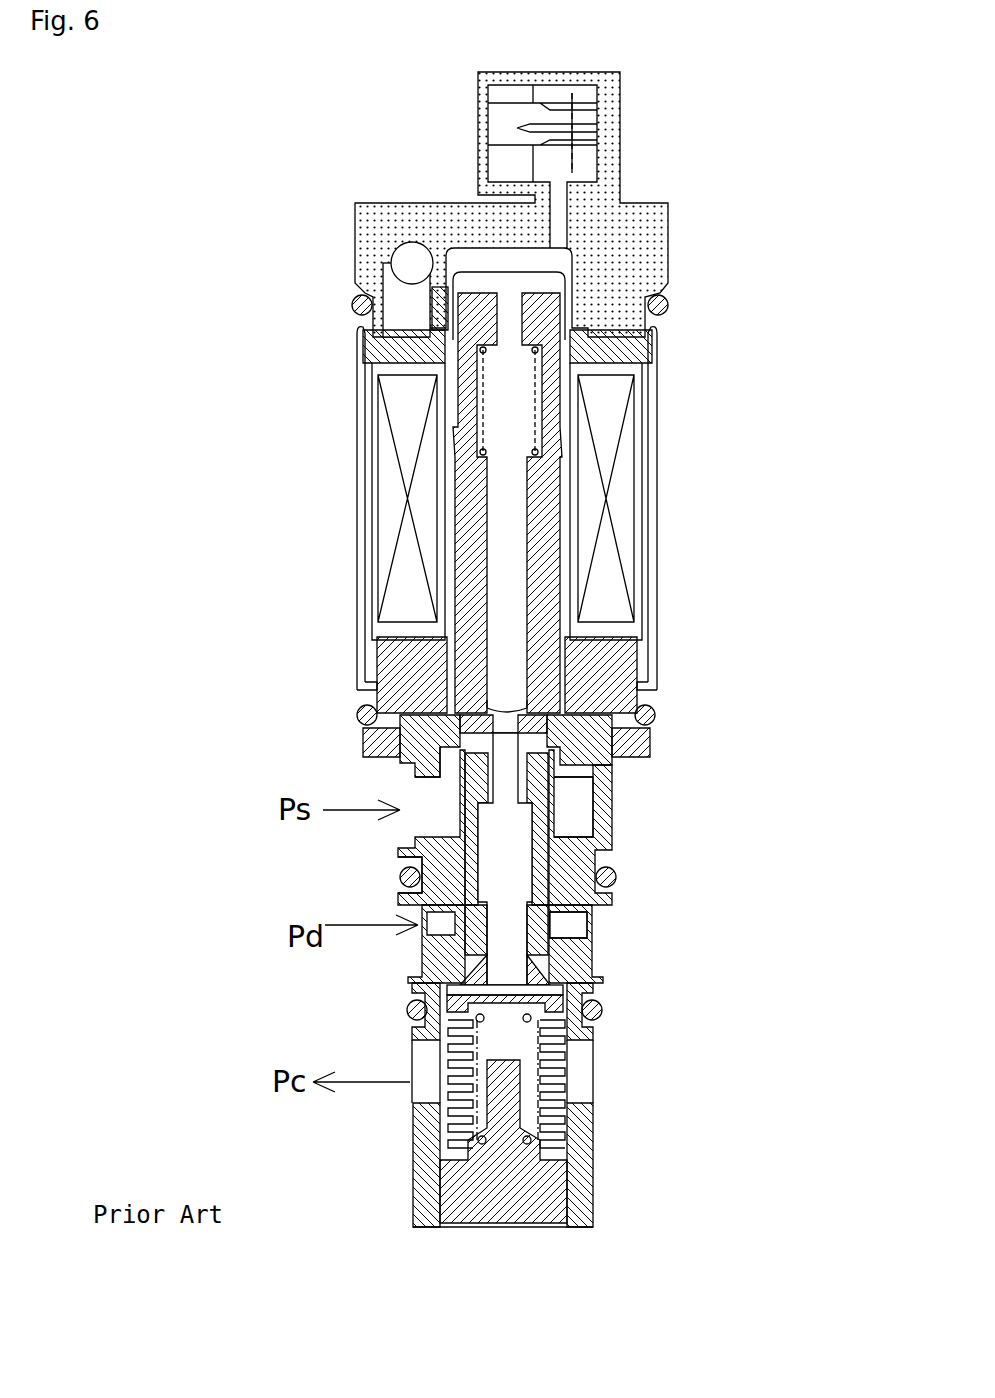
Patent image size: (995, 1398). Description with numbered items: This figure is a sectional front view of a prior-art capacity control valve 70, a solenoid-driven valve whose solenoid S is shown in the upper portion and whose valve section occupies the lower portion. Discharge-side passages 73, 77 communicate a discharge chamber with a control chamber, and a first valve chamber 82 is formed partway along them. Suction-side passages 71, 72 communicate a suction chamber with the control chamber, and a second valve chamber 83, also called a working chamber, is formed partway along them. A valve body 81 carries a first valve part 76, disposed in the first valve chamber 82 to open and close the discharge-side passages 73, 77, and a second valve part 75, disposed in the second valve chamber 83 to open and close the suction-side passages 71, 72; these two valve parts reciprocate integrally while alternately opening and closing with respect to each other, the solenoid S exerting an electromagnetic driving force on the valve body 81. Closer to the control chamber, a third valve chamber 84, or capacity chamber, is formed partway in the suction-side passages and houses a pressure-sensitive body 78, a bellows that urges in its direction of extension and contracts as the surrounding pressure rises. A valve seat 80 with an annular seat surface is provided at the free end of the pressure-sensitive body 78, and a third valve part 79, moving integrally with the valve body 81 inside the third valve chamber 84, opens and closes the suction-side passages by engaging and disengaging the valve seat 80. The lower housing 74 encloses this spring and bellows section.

The control valve 70 is at (297, 455).
The solenoid S is at (362, 493).
The suction-side passage 72 is at (505, 748).
The second valve part 75 is at (560, 788).
The second valve chamber 83 is at (553, 808).
The suction-side passage 71 is at (415, 815).
The valve body 81 is at (563, 880).
The first valve part 76 is at (400, 898).
The first valve chamber 82 is at (550, 927).
The discharge-side passage 77 is at (590, 946).
The discharge-side passage 73 is at (422, 928).
The third valve part 79 is at (550, 970).
The third valve chamber 84 is at (448, 1062).
The valve seat 80 is at (550, 1053).
The bottom housing 74 is at (412, 1090).
The pressure-sensitive body 78 is at (470, 1135).